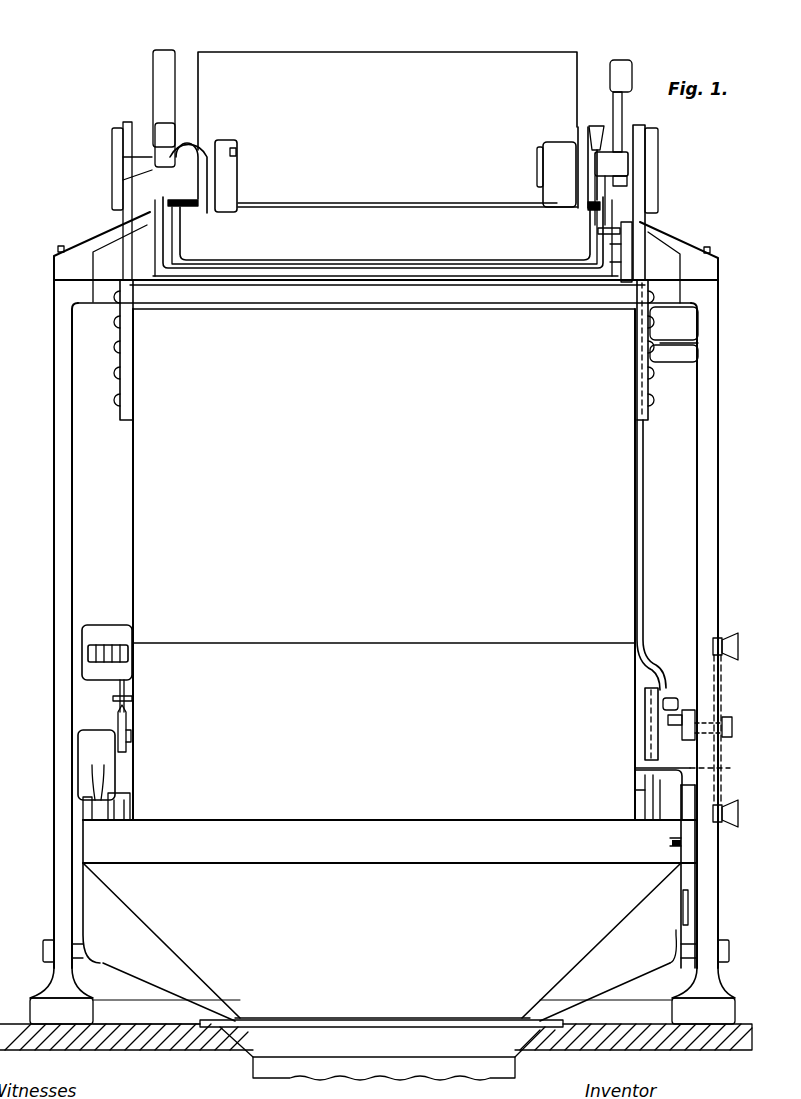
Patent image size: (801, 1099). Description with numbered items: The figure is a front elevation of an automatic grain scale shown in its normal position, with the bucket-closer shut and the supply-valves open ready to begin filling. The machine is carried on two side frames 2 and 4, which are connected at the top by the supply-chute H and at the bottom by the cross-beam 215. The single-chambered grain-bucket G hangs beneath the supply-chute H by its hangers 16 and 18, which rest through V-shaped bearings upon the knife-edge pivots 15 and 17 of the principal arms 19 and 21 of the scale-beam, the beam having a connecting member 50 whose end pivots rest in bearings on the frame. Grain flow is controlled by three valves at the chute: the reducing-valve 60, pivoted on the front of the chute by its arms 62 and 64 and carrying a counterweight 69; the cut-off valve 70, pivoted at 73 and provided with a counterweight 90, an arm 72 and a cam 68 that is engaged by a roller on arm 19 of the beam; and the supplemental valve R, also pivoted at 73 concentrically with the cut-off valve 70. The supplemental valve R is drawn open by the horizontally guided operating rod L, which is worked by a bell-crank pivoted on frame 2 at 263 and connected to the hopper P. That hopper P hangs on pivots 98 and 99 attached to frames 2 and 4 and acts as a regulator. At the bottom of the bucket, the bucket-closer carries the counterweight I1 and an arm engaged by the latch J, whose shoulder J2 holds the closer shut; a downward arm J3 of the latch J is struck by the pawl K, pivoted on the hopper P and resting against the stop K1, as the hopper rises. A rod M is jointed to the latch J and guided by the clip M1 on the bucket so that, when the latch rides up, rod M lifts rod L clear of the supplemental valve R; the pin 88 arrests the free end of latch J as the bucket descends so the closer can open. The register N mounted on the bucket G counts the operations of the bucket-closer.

The side frame 2 is at (712, 456).
The side frame 4 is at (63, 479).
The knife-edge pivot 15 is at (657, 182).
The hanger 16 is at (645, 140).
The knife-edge pivot 17 is at (121, 180).
The hanger 18 is at (127, 131).
The principal arm 19 is at (600, 128).
The principal arm 21 is at (186, 126).
The connecting member 50 is at (196, 130).
The reducing-valve 60 is at (384, 235).
The arm 62 is at (538, 174).
The arm 64 is at (207, 186).
The cam 68 is at (626, 179).
The counterweight 69 is at (163, 98).
The cut-off valve 70 is at (257, 267).
The arm 72 is at (623, 118).
The pivot 73 is at (194, 205).
The pin 88 is at (678, 727).
The counterweight 90 is at (626, 76).
The pivot 98 is at (730, 960).
The pivot 99 is at (45, 958).
The cross-beam 215 is at (362, 1012).
The pivot 263 is at (681, 360).
The discharge pit D is at (381, 1049).
The grain-bucket G is at (384, 564).
The supply-chute H is at (387, 129).
The counterweight I1 is at (104, 762).
The latch J is at (656, 686).
The shoulder J2 is at (652, 803).
The arm J3 is at (695, 761).
The pawl K is at (690, 862).
The stop K1 is at (690, 902).
The supplemental-valve-operating rod L is at (623, 246).
The rod M is at (641, 560).
The clip M1 is at (646, 345).
The counting or registering device N is at (118, 627).
The hopper P is at (390, 920).
The supplemental valve R is at (313, 280).